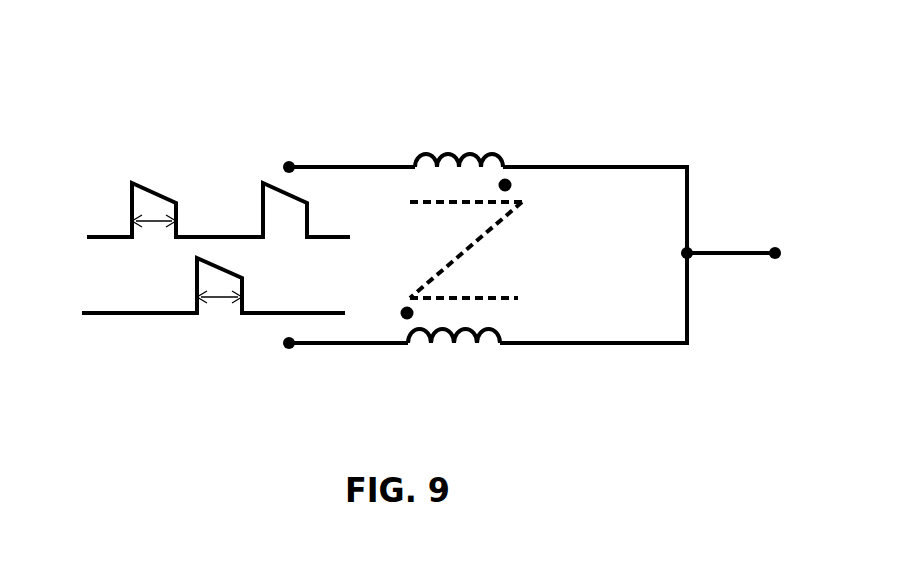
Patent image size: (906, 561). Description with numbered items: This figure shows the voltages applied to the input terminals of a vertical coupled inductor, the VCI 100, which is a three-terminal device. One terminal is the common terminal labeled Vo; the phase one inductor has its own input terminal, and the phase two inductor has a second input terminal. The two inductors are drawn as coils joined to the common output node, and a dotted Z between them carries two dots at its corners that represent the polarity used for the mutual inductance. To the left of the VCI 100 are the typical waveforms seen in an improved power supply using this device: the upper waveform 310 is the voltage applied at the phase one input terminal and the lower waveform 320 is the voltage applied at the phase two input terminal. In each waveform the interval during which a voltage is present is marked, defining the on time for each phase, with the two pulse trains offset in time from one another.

The vertical coupled inductor (VCI) 100 is at (505, 98).
The first input voltage waveform V1 310 is at (145, 165).
The second input voltage waveform V2 320 is at (133, 317).